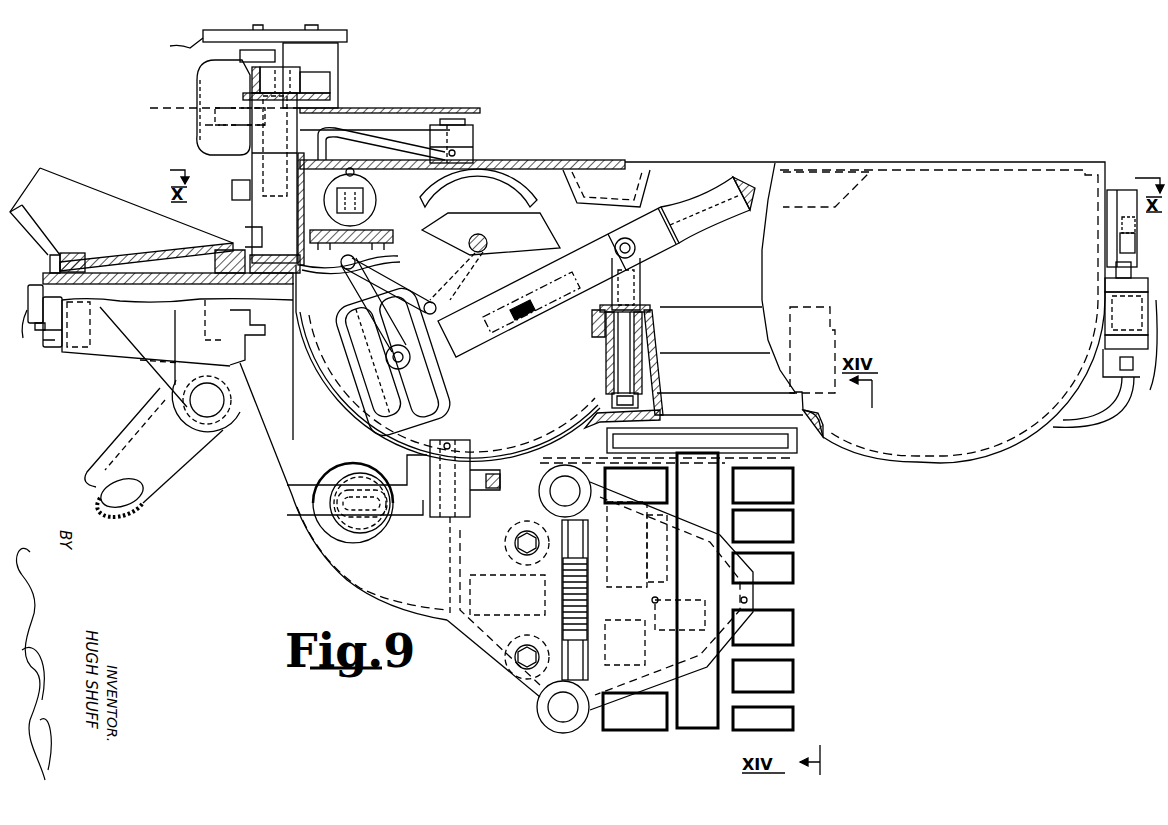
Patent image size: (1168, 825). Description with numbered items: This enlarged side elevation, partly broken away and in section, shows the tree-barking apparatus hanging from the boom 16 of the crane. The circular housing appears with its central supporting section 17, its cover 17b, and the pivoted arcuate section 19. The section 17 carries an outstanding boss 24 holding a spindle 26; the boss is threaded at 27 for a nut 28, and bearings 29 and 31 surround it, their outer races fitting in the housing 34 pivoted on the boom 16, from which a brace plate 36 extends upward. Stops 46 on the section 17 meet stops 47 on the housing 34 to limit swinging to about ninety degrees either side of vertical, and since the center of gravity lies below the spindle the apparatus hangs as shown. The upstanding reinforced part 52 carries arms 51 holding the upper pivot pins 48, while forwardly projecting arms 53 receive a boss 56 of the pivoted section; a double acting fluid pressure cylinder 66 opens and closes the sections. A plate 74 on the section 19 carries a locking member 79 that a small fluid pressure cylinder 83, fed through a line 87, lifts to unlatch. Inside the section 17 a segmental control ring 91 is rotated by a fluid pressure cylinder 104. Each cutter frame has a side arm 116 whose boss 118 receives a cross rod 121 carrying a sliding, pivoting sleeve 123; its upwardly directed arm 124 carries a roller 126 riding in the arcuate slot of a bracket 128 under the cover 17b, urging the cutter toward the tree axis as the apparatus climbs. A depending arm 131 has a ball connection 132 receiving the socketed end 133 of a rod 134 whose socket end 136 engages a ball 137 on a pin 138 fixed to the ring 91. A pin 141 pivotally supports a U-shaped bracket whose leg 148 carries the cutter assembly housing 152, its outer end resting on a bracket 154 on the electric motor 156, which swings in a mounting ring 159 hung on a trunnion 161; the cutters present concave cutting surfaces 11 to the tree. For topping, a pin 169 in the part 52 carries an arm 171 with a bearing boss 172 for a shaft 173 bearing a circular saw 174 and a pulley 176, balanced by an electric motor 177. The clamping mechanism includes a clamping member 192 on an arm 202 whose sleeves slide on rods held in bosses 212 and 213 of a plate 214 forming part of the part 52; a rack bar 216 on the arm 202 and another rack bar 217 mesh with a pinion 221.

The concave cutting surfaces 11 is at (720, 195).
The boom 16 is at (188, 462).
The central or supporting section 17 is at (278, 470).
The cover 17b is at (512, 165).
The housing section 19 is at (985, 195).
The boss 24 is at (288, 315).
The spindle 26 is at (31, 328).
The threads 27 is at (38, 282).
The nut 28 is at (53, 340).
The bearings 29 is at (85, 258).
The bearings 31 is at (215, 265).
The housing 34 is at (123, 250).
The brace plate 36 is at (85, 200).
The stops 46 is at (236, 200).
The stops 47 is at (253, 334).
The upper pivot points 48 is at (465, 137).
The arms 51 is at (404, 130).
The upstanding reinforced part 52 is at (250, 170).
The arms 53 is at (468, 452).
The boss 56 is at (450, 445).
The fluid pressure cylinder 66 is at (350, 468).
The plate 74 is at (1110, 190).
The locking member 79 is at (1128, 190).
The fluid pressure cylinder 83 is at (1145, 354).
The line 87 is at (1063, 428).
The control ring 91 is at (390, 232).
The fluid pressure cylinder 104 is at (377, 206).
The side arm 116 is at (445, 235).
The boss 118 is at (171, 45).
The cross rod 121 is at (482, 255).
The sleeve 123 is at (490, 245).
The arm 124 is at (510, 220).
The roller 126 is at (556, 184).
The bracket 128 is at (478, 172).
The arm 131 is at (412, 352).
The ball connection 132 is at (531, 302).
The socketed end 133 is at (400, 324).
The rod 134 is at (387, 286).
The socket end 136 is at (352, 272).
The ball 137 is at (330, 271).
The pin 138 is at (392, 262).
The pin 141 is at (620, 360).
The leg 148 is at (638, 290).
The cutter assembly housing 152 is at (525, 318).
The bracket 154 is at (512, 320).
The electric motor 156 is at (452, 392).
The mounting ring 159 is at (338, 410).
The trunnion 161 is at (395, 385).
The pin 169 is at (195, 124).
The arm 171 is at (305, 84).
The bearing boss 172 is at (340, 70).
The shaft 173 is at (340, 30).
The circular saw 174 is at (380, 110).
The pulley 176 is at (347, 45).
The electric motor 177 is at (210, 95).
The clamping member 192 is at (798, 625).
The arm 202 is at (755, 600).
The boss 212 is at (578, 478).
The boss 213 is at (563, 733).
The plate 214 is at (468, 595).
The rack bar 216 is at (580, 542).
The rack bar 217 is at (540, 690).
The pinion 221 is at (587, 615).